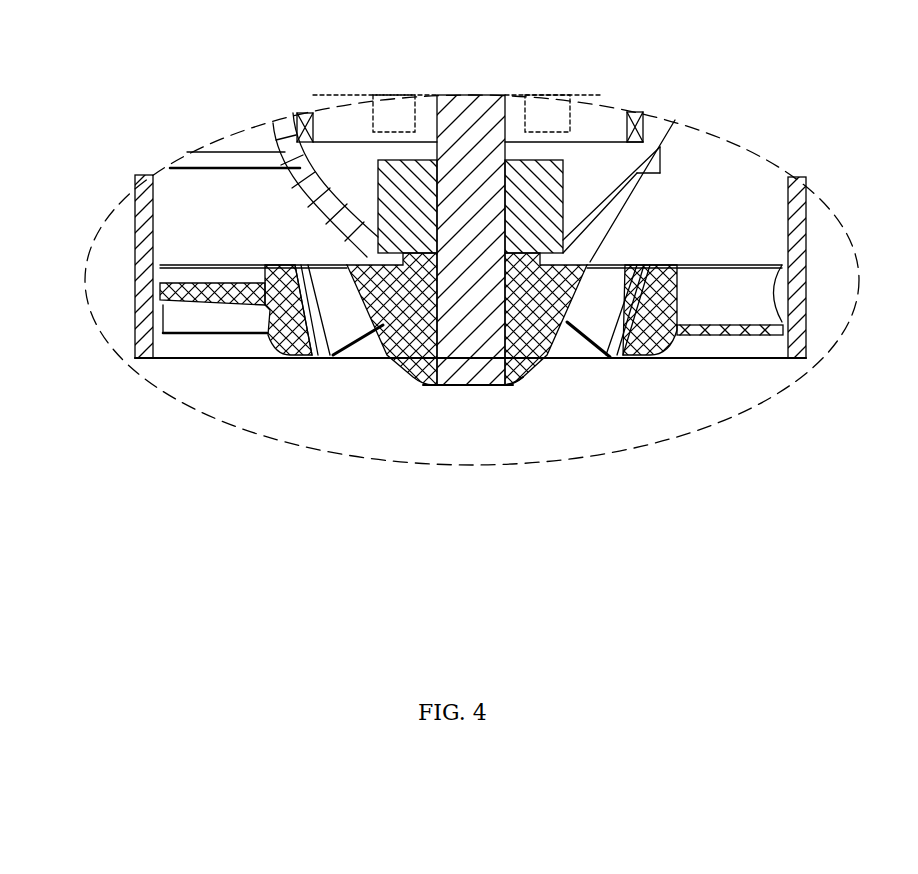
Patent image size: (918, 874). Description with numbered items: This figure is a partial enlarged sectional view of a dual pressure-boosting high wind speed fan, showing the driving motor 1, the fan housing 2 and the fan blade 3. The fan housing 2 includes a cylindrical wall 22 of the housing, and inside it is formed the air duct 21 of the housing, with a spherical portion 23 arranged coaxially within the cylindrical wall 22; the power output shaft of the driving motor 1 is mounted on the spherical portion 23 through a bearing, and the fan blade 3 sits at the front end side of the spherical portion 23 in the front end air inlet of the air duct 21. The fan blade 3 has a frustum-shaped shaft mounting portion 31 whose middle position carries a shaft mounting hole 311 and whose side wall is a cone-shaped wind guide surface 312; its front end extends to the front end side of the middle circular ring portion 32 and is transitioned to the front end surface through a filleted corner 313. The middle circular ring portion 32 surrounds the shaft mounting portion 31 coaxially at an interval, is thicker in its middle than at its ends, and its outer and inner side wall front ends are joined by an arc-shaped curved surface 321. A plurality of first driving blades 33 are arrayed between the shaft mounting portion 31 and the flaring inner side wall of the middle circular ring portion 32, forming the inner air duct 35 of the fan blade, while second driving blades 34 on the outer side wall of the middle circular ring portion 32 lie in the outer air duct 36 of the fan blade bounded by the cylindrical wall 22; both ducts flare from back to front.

The driving motor 1 is at (494, 205).
The fan housing 2 is at (128, 312).
The air duct of housing 21 is at (260, 220).
The cylindrical wall of housing 22 is at (143, 243).
The spherical portion 23 is at (347, 198).
The fan blade 3 is at (652, 402).
The shaft mounting portion 31 is at (452, 386).
The shaft mounting hole 311 is at (568, 448).
The cone-shaped wind guide surface 312 is at (297, 422).
The filleted corner 313 is at (466, 451).
The middle circular ring portion 32 is at (270, 357).
The arc-shaped curved surface 321 is at (313, 358).
The first driving blade 33 is at (645, 383).
The second driving blade 34 is at (781, 355).
The inner air duct of fan blade 35 is at (701, 209).
The outer air duct of fan blade 36 is at (700, 347).